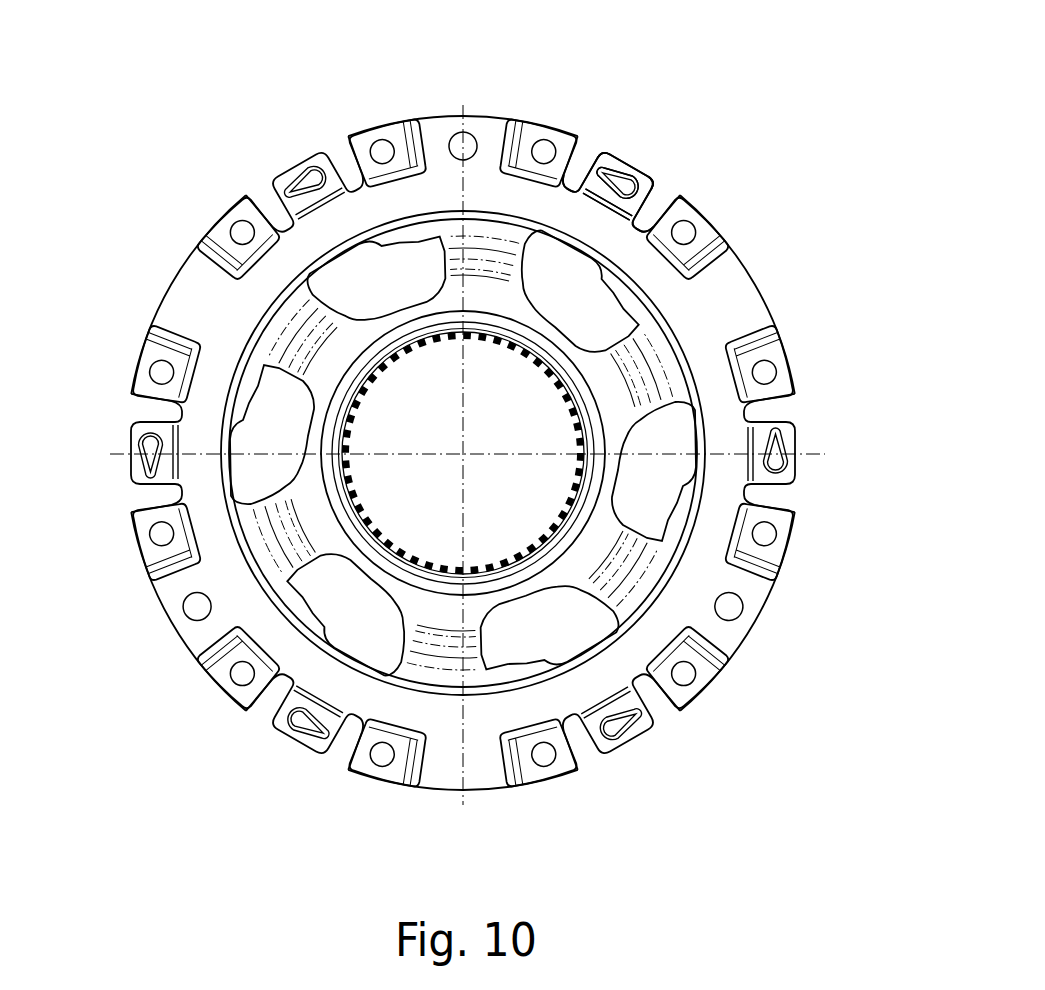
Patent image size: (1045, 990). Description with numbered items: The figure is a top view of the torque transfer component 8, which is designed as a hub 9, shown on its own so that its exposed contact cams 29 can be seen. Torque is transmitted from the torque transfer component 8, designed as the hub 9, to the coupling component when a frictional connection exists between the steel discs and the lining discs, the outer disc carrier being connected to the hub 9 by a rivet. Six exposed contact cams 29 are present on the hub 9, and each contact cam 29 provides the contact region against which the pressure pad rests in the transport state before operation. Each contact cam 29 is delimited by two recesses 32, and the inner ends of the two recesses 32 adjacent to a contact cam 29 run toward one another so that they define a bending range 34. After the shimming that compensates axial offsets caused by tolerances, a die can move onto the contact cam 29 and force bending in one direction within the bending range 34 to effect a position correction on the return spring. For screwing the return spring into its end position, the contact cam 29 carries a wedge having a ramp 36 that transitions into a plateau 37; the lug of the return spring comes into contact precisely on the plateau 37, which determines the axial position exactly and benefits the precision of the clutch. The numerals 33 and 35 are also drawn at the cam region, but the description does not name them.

The torque transfer component 8 is at (499, 453).
The hub 9 is at (573, 453).
The contact cam 29 is at (466, 451).
The recess 32 is at (671, 128).
The side edge 33 is at (678, 141).
The bending range 34 is at (494, 435).
The step 35 is at (667, 164).
The ramp 36 is at (628, 120).
The plateau 37 is at (654, 150).